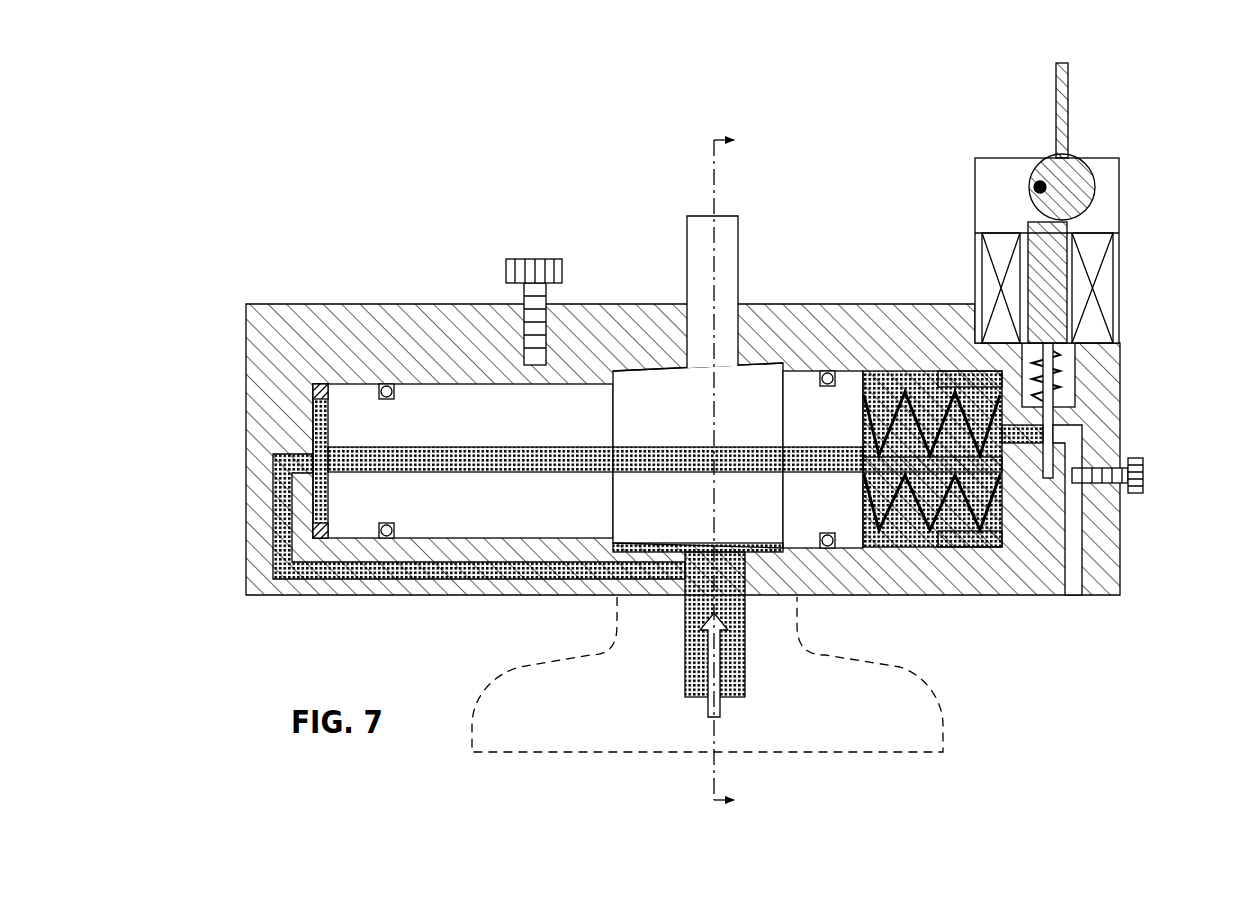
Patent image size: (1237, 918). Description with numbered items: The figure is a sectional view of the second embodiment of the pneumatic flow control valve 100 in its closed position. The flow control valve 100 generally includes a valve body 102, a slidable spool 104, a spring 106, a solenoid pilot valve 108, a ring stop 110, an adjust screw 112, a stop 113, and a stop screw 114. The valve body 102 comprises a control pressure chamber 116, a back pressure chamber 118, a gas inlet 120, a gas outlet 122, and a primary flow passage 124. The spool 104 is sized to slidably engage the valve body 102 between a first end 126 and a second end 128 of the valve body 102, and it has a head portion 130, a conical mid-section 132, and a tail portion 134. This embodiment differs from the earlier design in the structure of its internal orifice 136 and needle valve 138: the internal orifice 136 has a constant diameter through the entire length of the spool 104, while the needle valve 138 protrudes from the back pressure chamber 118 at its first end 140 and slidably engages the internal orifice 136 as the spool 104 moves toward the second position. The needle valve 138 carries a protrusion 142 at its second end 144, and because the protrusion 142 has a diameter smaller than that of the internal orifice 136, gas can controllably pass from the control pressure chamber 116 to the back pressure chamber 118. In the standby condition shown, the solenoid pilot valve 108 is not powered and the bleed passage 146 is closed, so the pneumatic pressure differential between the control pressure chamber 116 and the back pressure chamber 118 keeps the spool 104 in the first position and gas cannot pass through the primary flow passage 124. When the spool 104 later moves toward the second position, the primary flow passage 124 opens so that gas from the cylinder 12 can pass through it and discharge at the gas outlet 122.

The flow control valve 100 is at (590, 143).
The valve body 102 is at (583, 378).
The slidable spool 104 is at (445, 392).
The spring 106 is at (1010, 560).
The solenoid pilot valve 108 is at (1122, 170).
The ring stop 110 is at (962, 357).
The adjust screw 112 is at (1147, 472).
The stop 113 is at (315, 385).
The stop screw 114 is at (530, 259).
The control pressure chamber 116 is at (320, 502).
The back pressure chamber 118 is at (905, 370).
The gas inlet 120 is at (742, 665).
The gas outlet 122 is at (735, 229).
The primary flow passage 124 is at (742, 368).
The first end 126 is at (315, 548).
The second end 128 is at (1019, 472).
The head portion 130 is at (472, 522).
The conical mid-section 132 is at (662, 520).
The tail portion 134 is at (805, 535).
The internal orifice 136 is at (388, 468).
The needle valve 138 is at (962, 505).
The first end 140 is at (1010, 455).
The protrusion 142 is at (923, 465).
The second end 144 is at (962, 530).
The bleed passage 146 is at (1072, 518).
The cylinder 12 is at (811, 744).